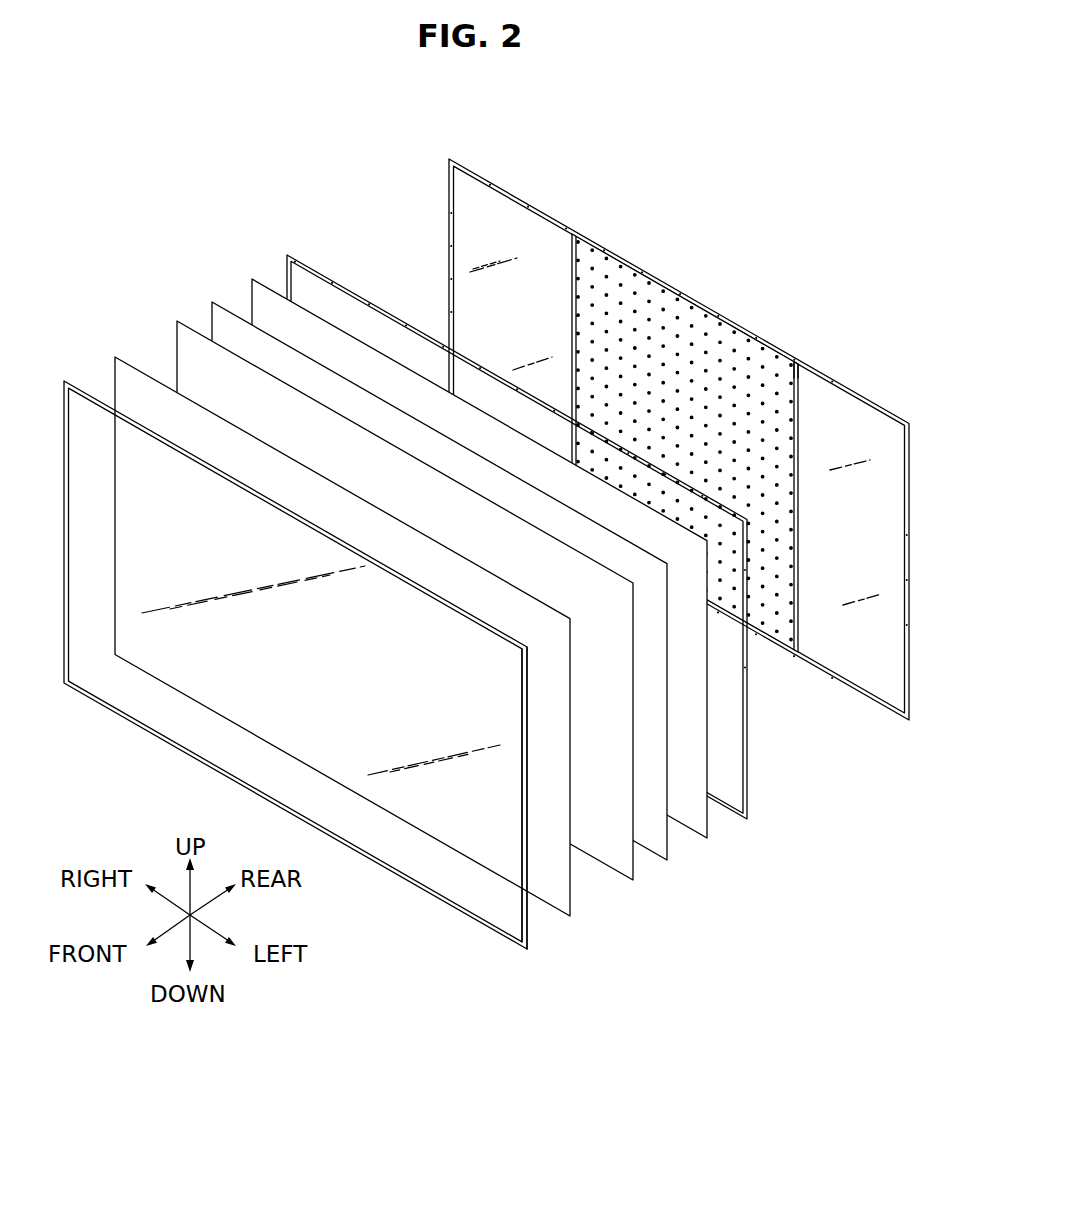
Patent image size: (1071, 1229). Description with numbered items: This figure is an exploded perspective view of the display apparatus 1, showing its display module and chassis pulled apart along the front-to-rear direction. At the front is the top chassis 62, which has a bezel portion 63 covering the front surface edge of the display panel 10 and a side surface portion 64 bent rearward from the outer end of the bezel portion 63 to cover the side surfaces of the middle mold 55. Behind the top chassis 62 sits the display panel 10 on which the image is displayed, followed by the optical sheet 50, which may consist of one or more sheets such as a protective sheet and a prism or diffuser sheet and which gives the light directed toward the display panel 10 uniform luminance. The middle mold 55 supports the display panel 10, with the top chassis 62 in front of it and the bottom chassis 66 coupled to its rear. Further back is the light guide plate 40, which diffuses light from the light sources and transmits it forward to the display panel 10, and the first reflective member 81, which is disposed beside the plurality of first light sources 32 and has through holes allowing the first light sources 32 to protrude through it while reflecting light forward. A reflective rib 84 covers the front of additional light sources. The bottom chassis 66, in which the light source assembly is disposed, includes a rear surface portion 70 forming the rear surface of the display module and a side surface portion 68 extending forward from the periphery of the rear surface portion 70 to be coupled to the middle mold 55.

The display apparatus 1 is at (226, 206).
The display panel 10 is at (566, 896).
The first light sources 32 is at (608, 293).
The light guide plate 40 is at (478, 229).
The optical sheet 50 is at (714, 840).
The middle mold 55 is at (747, 817).
The top chassis 62 is at (526, 946).
The bezel portion 63 is at (518, 924).
The side surface portion 64 is at (528, 921).
The bottom chassis 66 is at (853, 377).
The side surface portion 68 is at (792, 362).
The rear surface portion 70 is at (889, 412).
The first reflective member 81 is at (688, 318).
The reflective rib 84 is at (573, 248).